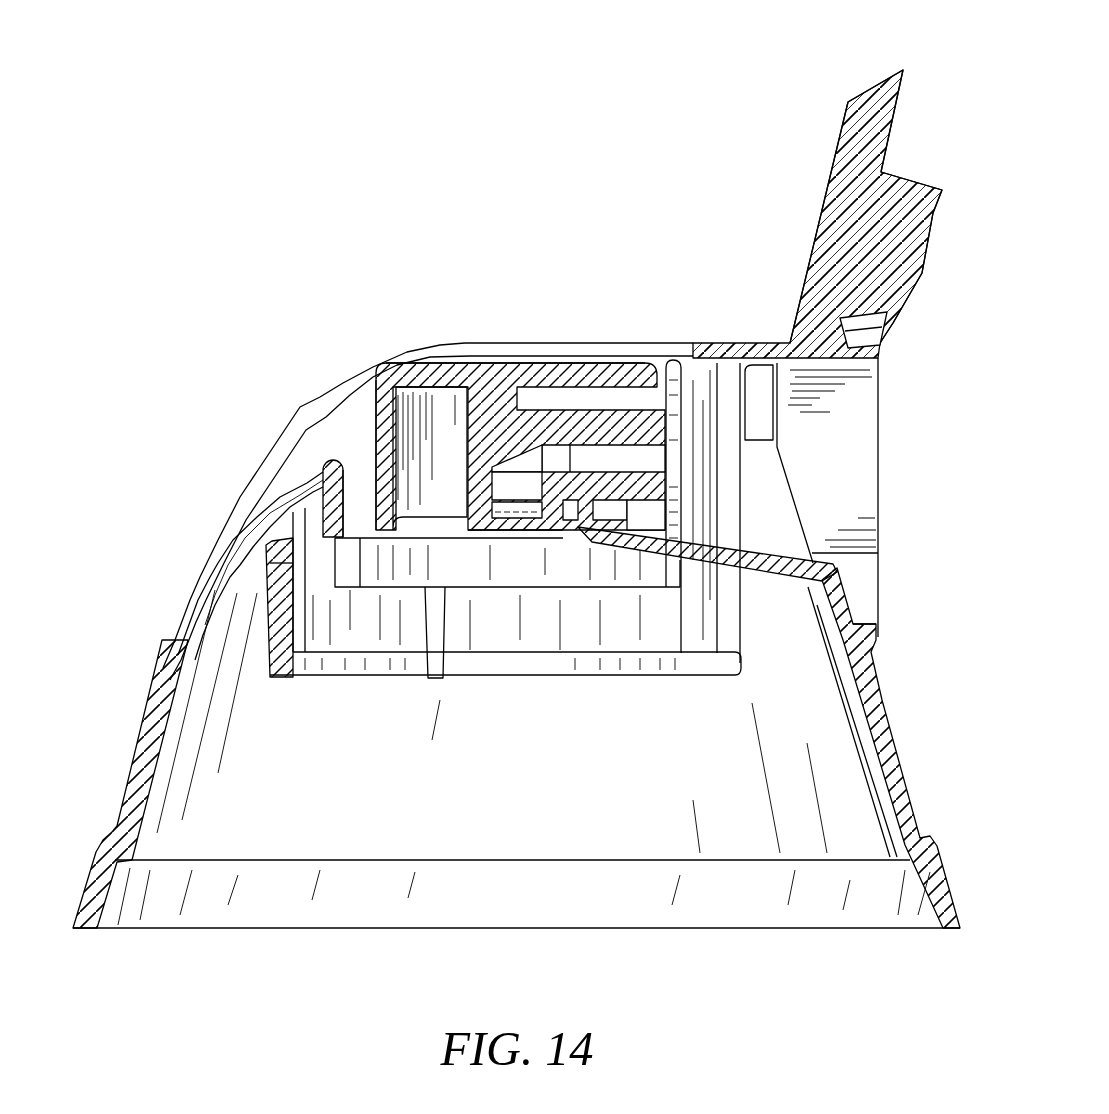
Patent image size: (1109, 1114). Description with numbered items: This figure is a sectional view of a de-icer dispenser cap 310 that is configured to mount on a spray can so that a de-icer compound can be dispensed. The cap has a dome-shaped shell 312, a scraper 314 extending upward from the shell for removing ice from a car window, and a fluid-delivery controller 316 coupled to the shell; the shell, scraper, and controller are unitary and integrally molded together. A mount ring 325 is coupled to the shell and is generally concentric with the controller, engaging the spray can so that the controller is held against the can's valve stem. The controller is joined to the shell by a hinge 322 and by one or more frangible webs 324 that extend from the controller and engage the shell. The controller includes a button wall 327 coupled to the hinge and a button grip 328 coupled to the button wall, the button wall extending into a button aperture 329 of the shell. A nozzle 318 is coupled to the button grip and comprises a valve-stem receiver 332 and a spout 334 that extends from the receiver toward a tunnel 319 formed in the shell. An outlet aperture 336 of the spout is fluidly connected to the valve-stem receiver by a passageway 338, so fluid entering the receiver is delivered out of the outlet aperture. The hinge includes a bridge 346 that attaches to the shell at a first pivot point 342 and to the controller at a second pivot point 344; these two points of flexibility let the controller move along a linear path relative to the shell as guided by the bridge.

The de-icer dispenser cap 310 is at (255, 158).
The dome-shaped shell 312 is at (873, 781).
The scraper 314 is at (828, 148).
The fluid-delivery controller 316 is at (502, 352).
The nozzle 318 is at (639, 385).
The tunnel 319 is at (852, 415).
The hinge 322 is at (760, 592).
The frangible webs 324 is at (242, 526).
The mount ring 325 is at (262, 626).
The button wall 327 is at (364, 426).
The button grip 328 is at (428, 366).
The button aperture 329 is at (357, 476).
The valve-stem receiver 332 is at (597, 454).
The spout 334 is at (643, 522).
The outlet aperture 336 is at (673, 451).
The passageway 338 is at (514, 522).
The first pivot point 342 is at (810, 602).
The second pivot point 344 is at (580, 546).
The bridge 346 is at (703, 592).